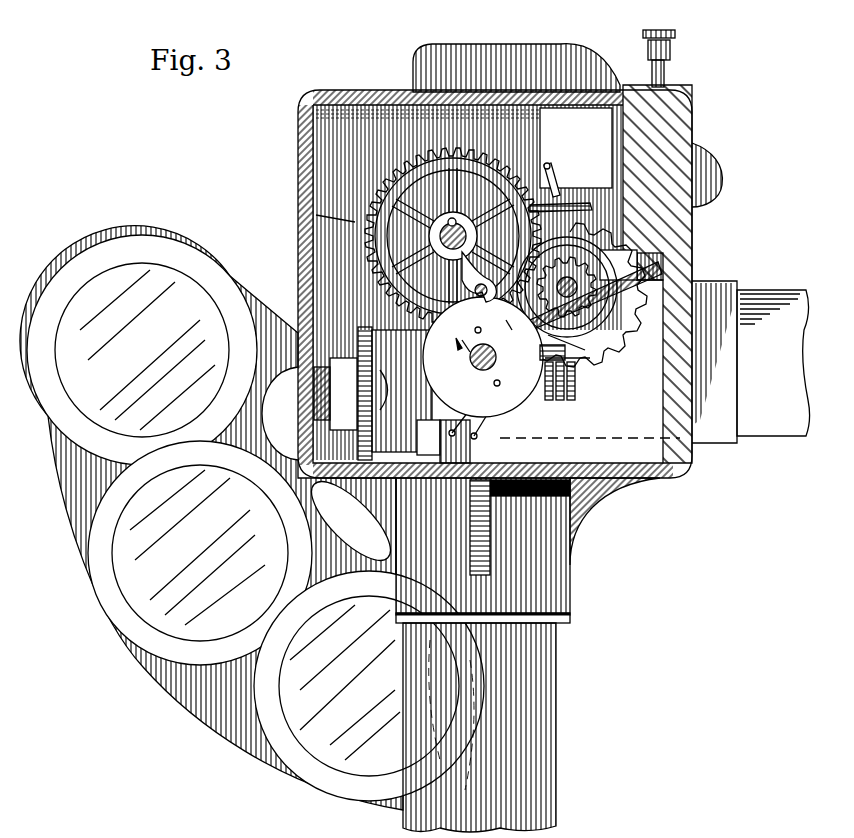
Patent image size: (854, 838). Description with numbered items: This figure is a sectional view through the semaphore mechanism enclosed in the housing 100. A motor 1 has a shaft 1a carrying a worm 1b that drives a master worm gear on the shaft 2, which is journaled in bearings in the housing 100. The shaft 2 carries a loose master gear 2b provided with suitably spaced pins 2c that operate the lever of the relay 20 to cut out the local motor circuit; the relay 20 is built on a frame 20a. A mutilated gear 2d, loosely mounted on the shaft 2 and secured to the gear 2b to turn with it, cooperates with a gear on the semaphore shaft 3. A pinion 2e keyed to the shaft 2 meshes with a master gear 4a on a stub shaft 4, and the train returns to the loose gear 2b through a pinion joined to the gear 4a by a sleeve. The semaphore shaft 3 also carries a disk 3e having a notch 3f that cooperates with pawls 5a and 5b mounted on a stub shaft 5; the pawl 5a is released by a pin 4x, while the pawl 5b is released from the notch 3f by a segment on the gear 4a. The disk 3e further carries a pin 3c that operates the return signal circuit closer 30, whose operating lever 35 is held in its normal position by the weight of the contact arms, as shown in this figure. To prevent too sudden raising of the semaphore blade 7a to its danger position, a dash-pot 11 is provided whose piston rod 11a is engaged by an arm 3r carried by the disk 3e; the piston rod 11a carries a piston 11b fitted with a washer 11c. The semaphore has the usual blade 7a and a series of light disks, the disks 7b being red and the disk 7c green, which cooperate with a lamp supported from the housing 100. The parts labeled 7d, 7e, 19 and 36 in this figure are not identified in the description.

The housing 100 is at (398, 104).
The lug on housing 7d is at (517, 56).
The blade 7a is at (751, 362).
The red light disks 7b is at (169, 450).
The green light disk 7c is at (369, 686).
The window frame 7e is at (82, 528).
The dash-pot 11 is at (680, 158).
The piston rod 11a is at (664, 264).
The piston 11b is at (671, 50).
The washer 11c is at (665, 72).
The panel 19 is at (548, 198).
The relay 20 is at (552, 164).
The frame 20a is at (565, 190).
The stub shaft 4 is at (430, 243).
The master gear 4a is at (316, 215).
The pin 4x is at (450, 219).
The shaft 2 is at (562, 284).
The master gear 2b is at (610, 352).
The pins 2c is at (580, 380).
The mutilated gear 2d is at (628, 332).
The pinion 2e is at (583, 307).
The motor 1 is at (392, 372).
The motor shaft 1a is at (518, 400).
The worm 1b is at (592, 383).
The semaphore shaft 3 is at (483, 357).
The pin 3c is at (497, 390).
The disk 3e is at (451, 358).
The notch 3f is at (477, 323).
The arm 3r is at (636, 316).
The stub shaft 5 is at (486, 330).
The pawl 5a is at (516, 330).
The pawl 5b is at (448, 339).
The return signal circuit closer 30 is at (458, 434).
The operating lever 35 is at (453, 410).
The pin 36 is at (500, 428).